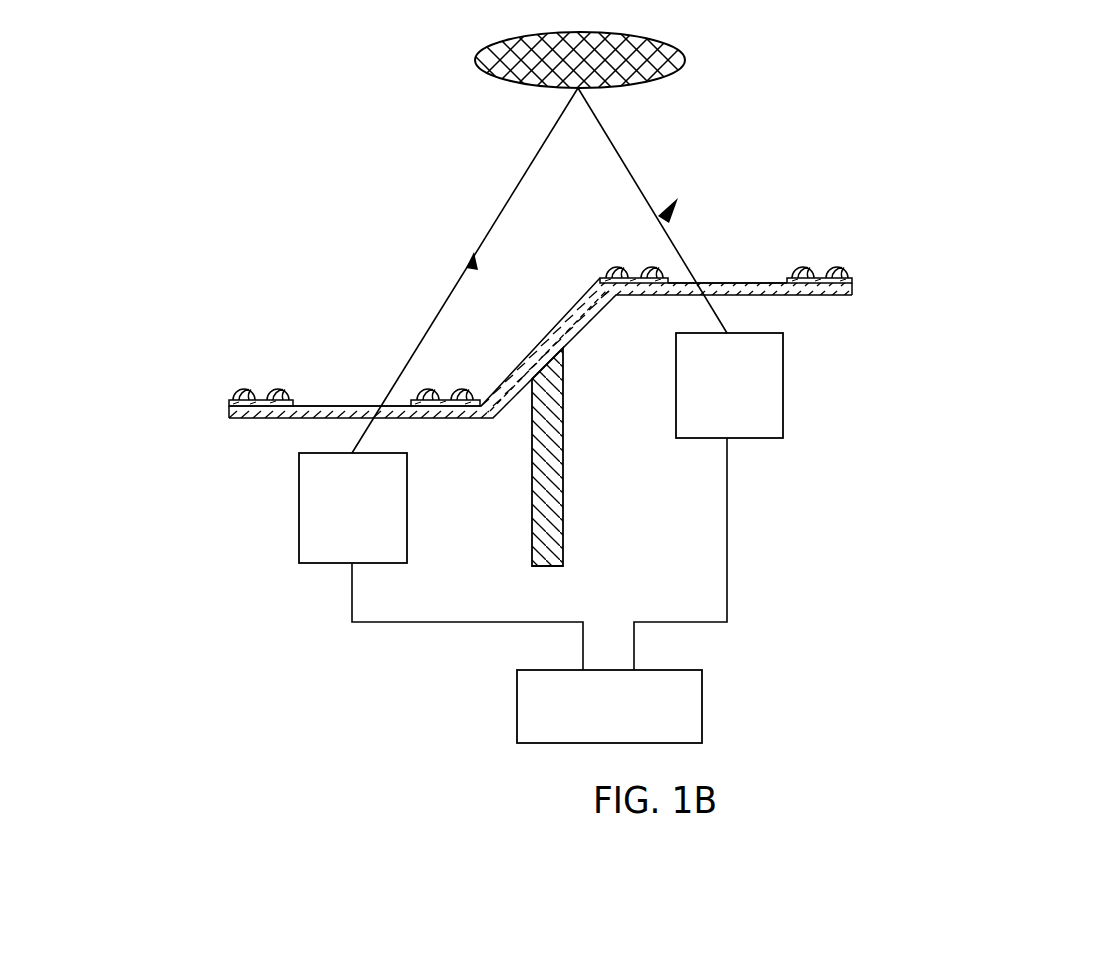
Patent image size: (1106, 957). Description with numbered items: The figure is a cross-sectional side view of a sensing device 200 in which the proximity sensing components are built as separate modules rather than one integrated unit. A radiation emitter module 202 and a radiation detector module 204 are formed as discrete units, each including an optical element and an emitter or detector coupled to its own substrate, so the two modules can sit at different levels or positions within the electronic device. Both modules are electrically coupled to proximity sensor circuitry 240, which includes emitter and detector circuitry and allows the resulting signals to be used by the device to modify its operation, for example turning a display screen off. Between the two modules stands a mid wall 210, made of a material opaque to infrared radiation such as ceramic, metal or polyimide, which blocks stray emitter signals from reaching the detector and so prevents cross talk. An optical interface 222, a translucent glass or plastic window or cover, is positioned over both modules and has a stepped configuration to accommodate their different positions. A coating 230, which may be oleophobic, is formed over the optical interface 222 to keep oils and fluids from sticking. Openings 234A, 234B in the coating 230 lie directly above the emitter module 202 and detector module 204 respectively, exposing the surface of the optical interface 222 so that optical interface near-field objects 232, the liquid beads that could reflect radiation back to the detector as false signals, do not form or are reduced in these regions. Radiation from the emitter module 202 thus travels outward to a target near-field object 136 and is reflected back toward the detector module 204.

The sensing device 200 is at (209, 228).
The target near-field object 136 is at (672, 46).
The optical interface 222 is at (853, 290).
The coating 230 is at (853, 279).
The optical interface near-field objects 232 is at (845, 266).
The opening 234A is at (735, 244).
The opening 234B is at (336, 372).
The mid wall 210 is at (563, 500).
The radiation emitter module 202 is at (783, 386).
The radiation detector module 204 is at (299, 492).
The proximity sensor circuitry 240 is at (702, 702).